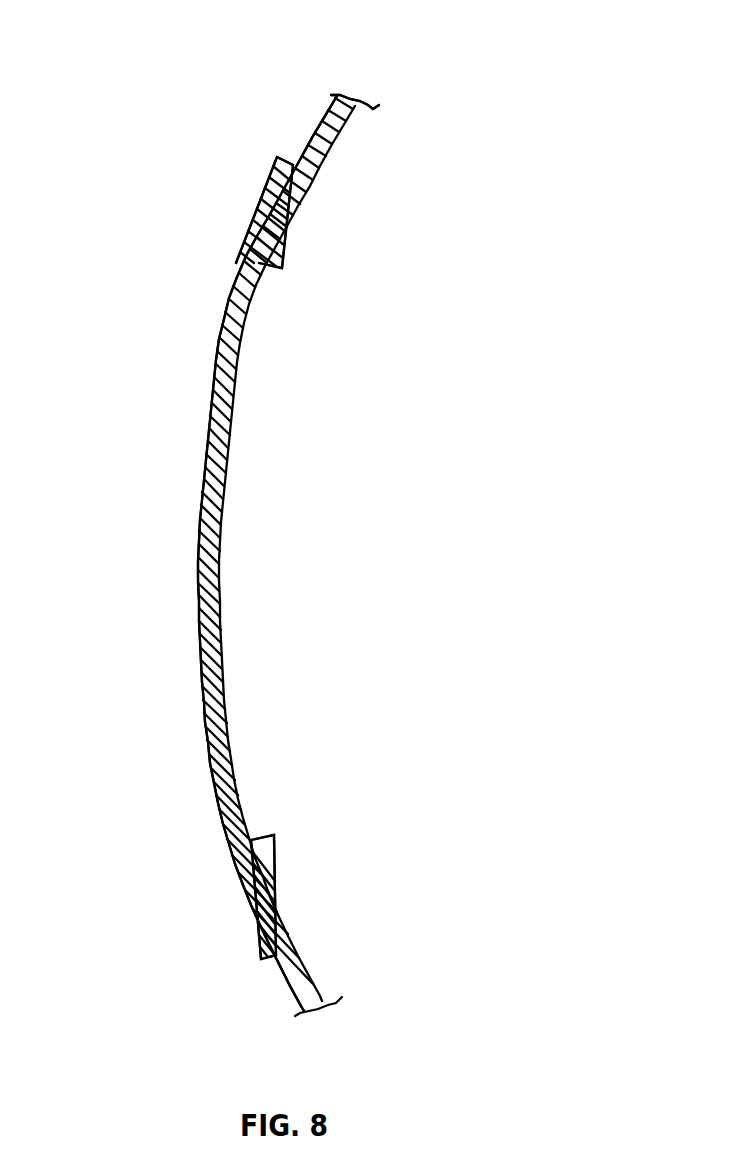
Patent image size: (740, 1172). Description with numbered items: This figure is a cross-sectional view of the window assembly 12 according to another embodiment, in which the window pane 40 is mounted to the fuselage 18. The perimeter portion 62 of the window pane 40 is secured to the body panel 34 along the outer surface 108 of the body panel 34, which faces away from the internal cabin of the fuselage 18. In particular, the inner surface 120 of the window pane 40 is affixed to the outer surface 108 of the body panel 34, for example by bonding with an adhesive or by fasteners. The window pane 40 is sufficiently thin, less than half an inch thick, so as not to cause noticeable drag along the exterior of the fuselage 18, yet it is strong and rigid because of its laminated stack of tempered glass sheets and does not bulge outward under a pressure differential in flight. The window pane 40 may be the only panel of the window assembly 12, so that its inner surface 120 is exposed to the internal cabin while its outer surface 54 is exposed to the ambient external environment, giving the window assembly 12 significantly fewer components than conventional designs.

The window assembly 12 is at (135, 236).
The fuselage 18 is at (331, 100).
The body panel 34 is at (327, 150).
The window pane 40 is at (263, 523).
The outer surface 54 is at (210, 423).
The perimeter portion 62 is at (214, 201).
The outer surface 108 is at (308, 144).
The inner surface 120 is at (281, 202).